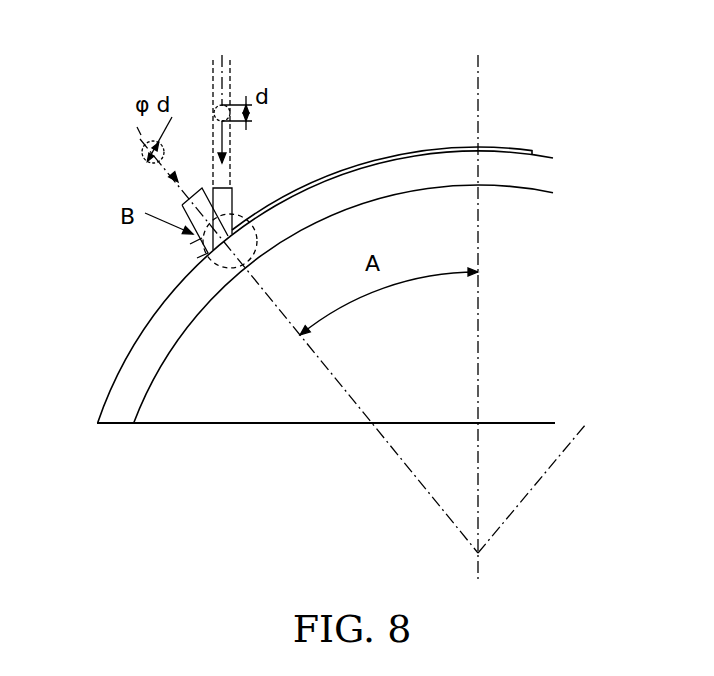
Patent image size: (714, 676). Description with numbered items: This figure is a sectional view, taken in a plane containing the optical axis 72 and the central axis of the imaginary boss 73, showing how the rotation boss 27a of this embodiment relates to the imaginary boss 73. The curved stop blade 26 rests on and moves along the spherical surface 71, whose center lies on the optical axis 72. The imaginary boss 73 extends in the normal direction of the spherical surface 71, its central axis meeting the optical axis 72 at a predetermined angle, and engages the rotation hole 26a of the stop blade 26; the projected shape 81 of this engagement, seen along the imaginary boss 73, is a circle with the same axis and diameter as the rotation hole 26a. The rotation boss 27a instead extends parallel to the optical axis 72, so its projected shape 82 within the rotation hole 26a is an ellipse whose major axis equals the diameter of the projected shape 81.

The stop blade 26 is at (368, 160).
The rotation hole 26a is at (233, 222).
The rotation boss 27a is at (232, 188).
The spherical surface 71 is at (110, 394).
The optical axis 72 is at (481, 108).
The imaginary boss 73 is at (200, 237).
The projected shape 81 is at (142, 152).
The projected shape 82 is at (215, 108).